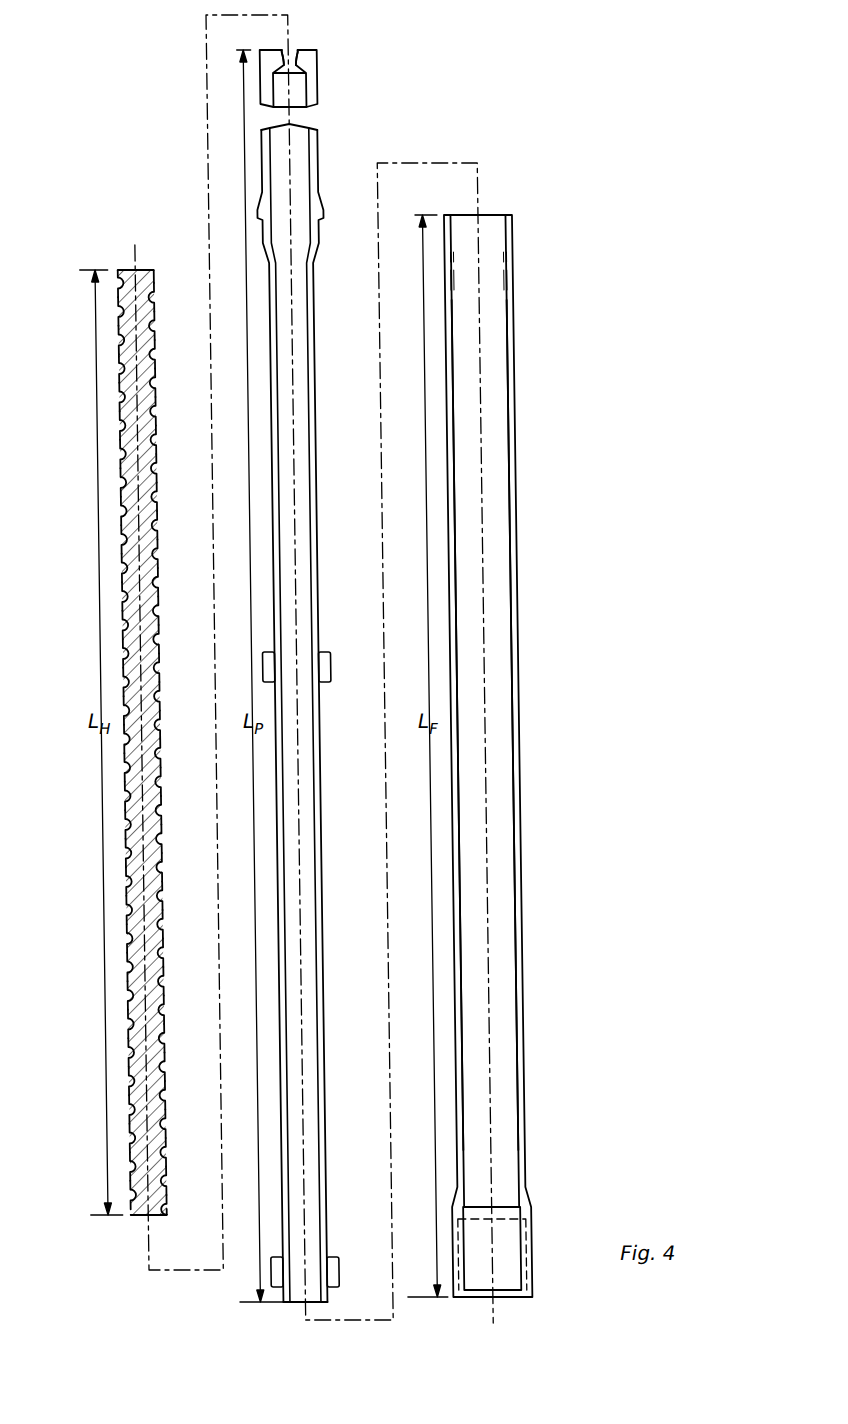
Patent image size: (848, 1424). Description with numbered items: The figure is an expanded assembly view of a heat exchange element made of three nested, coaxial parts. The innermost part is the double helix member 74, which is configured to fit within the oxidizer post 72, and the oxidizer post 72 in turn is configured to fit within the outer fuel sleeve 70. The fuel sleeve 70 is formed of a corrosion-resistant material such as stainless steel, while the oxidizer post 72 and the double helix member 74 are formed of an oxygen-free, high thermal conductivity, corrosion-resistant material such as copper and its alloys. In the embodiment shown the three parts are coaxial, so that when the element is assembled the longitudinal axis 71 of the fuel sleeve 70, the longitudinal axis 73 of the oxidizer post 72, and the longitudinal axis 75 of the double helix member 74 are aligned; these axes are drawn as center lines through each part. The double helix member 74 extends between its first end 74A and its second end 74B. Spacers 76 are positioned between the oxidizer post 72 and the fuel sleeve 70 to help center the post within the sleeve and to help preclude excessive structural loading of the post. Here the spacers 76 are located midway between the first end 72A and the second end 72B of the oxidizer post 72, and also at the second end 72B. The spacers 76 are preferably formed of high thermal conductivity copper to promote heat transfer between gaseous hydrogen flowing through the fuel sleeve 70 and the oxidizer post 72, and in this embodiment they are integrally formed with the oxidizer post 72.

The fuel sleeve 70 is at (529, 268).
The longitudinal axis of fuel sleeve 71 is at (474, 376).
The oxidizer post 72 is at (341, 141).
The first end of oxidizer post 72A is at (297, 49).
The second end of oxidizer post 72B is at (278, 1302).
The longitudinal axis of oxidizer post 73 is at (287, 430).
The double helix member 74 is at (111, 465).
The first end of double helix member 74A is at (119, 268).
The second end of double helix member 74B is at (117, 1216).
The longitudinal axis of double helix member 75 is at (127, 925).
The spacers 76 is at (316, 652).